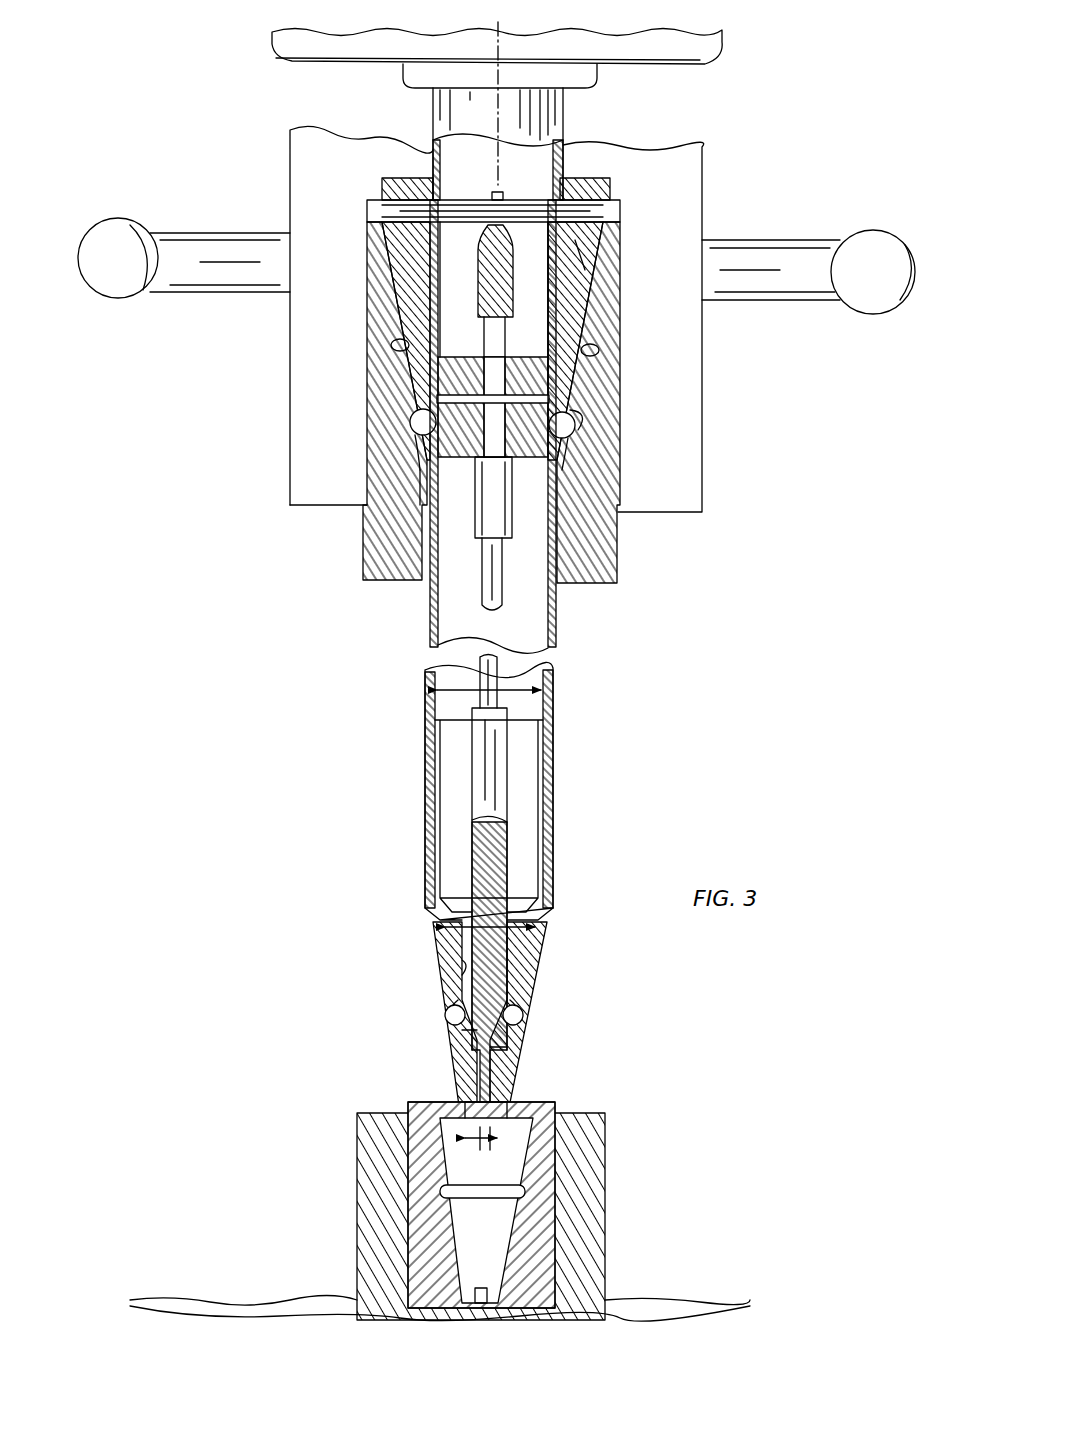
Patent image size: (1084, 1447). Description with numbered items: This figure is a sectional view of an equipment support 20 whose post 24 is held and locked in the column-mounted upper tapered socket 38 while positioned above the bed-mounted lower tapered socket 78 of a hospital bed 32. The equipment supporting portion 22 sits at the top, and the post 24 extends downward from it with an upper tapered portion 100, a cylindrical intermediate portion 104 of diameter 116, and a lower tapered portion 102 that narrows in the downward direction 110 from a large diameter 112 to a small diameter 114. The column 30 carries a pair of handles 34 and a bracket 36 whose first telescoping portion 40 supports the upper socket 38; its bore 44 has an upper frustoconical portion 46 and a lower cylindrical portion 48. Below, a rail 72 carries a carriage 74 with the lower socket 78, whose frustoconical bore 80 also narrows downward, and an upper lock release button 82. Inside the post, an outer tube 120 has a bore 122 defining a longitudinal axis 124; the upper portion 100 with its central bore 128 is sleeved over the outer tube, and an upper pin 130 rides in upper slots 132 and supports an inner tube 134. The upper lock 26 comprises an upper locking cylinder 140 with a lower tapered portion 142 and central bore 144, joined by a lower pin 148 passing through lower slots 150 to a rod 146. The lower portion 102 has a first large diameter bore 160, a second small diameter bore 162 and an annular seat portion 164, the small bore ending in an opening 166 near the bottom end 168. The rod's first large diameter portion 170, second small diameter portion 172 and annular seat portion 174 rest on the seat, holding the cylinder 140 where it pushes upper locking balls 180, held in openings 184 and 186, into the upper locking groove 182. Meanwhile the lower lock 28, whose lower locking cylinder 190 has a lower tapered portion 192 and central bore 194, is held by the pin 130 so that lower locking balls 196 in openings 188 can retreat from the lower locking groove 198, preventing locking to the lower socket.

The equipment support 20 is at (712, 80).
The equipment supporting portion 22 is at (294, 28).
The post 24 is at (405, 852).
The upper lock 26 is at (582, 412).
The lower lock 28 is at (552, 1005).
The column 30 is at (212, 308).
The hospital bed 32 is at (262, 1286).
The handles 34 is at (130, 245).
The bracket 36 is at (282, 160).
The upper tapered socket 38 is at (345, 349).
The first telescoping portion 40 is at (688, 192).
The bore 44 is at (600, 322).
The upper frustoconical portion 46 is at (598, 248).
The lower cylindrical portion 48 is at (560, 545).
The rail 72 is at (712, 1300).
The carriage 74 is at (357, 1240).
The lower tapered socket 78 is at (592, 1210).
The frustoconical bore 80 is at (522, 1242).
The upper lock release button 82 is at (420, 1270).
The upper tapered portion 100 is at (382, 268).
The lower tapered portion 102 is at (447, 942).
The cylindrical intermediate portion 104 is at (557, 614).
The downward direction 110 is at (310, 770).
The large diameter 112 is at (465, 930).
The small diameter 114 is at (565, 1152).
The diameter 116 is at (466, 682).
The outer tube 120 is at (562, 575).
The bore 122 is at (433, 586).
The longitudinal axis 124 is at (540, 124).
The central bore 128 is at (556, 292).
The upper pin 130 is at (514, 208).
The upper slots 132 is at (398, 236).
The inner tube 134 is at (398, 296).
The upper locking cylinder 140 is at (562, 380).
The lower tapered portion 142 is at (432, 470).
The central bore 144 is at (484, 480).
The rod 146 is at (482, 596).
The lower pin 148 is at (478, 355).
The lower slots 150 is at (393, 346).
The first large diameter bore 160 is at (447, 976).
The second small diameter bore 162 is at (480, 1080).
The annular seat portion 164 is at (470, 1060).
The opening 166 is at (410, 1126).
The bottom end 168 is at (470, 1090).
The first large diameter portion 170 is at (480, 1030).
The second small diameter portion 172 is at (485, 1095).
The annular seat portion 174 is at (480, 1047).
The upper locking balls 180 is at (414, 436).
The upper locking groove 182 is at (578, 424).
The openings 184 is at (437, 399).
The openings 186 is at (582, 430).
The openings 188 is at (448, 1000).
The lower locking cylinder 190 is at (540, 968).
The lower tapered portion 192 is at (515, 1045).
The central bore 194 is at (560, 960).
The lower locking balls 196 is at (445, 1015).
The lower locking groove 198 is at (448, 1178).